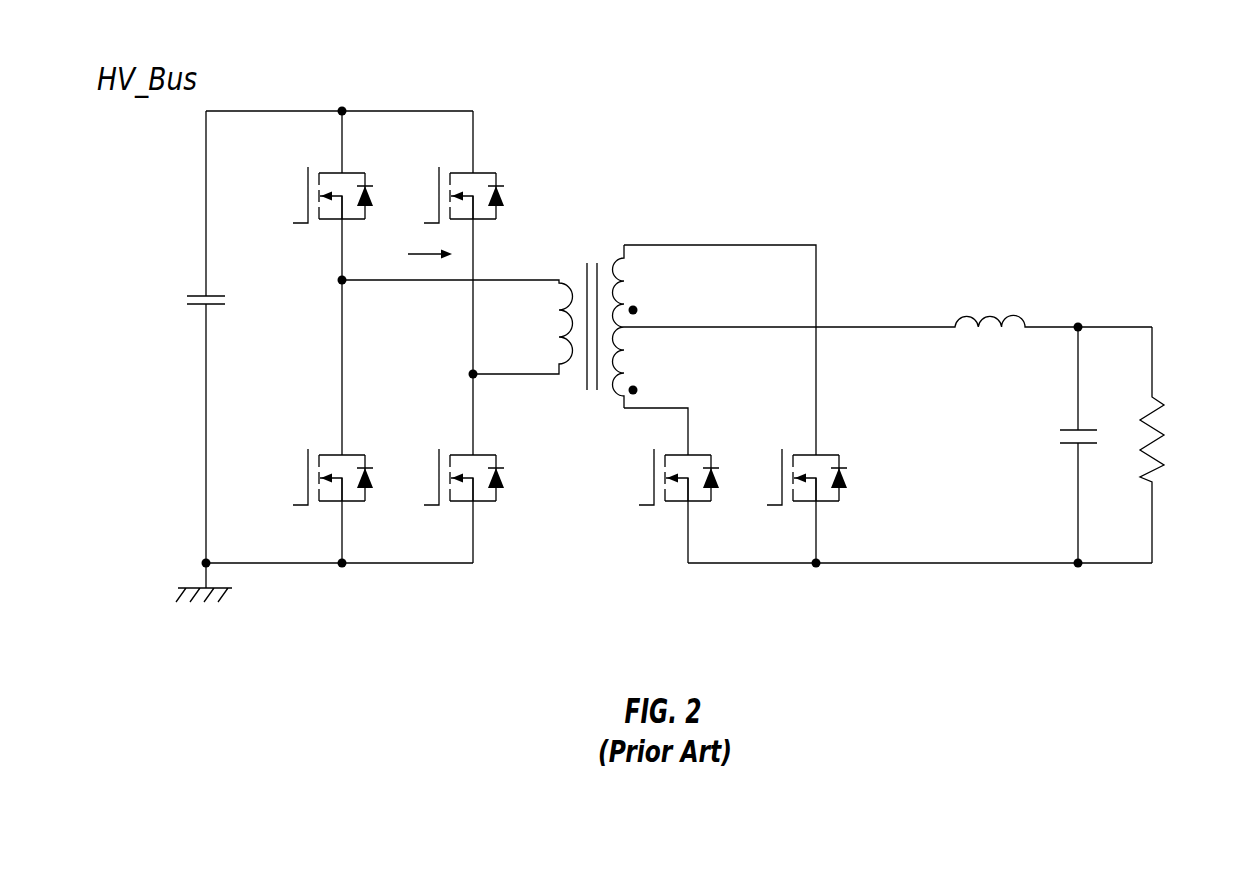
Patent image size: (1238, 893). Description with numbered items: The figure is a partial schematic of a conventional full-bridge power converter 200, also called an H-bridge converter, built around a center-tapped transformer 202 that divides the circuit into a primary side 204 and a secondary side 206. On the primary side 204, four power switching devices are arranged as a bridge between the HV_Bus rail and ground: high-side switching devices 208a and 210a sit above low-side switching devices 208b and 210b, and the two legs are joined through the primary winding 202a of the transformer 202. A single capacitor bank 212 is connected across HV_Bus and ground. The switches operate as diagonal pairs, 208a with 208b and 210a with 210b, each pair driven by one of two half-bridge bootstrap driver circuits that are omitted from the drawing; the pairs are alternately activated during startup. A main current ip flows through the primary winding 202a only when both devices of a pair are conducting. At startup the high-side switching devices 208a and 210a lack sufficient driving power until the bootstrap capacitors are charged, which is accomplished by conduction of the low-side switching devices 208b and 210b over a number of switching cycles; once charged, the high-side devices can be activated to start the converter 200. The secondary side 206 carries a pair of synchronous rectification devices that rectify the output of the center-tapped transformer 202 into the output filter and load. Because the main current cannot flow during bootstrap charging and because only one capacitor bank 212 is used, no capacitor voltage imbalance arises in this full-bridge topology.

The full-bridge power converter 200 is at (1007, 70).
The center-tapped transformer 202 is at (514, 296).
The primary winding 202a is at (558, 282).
The primary side 204 is at (388, 377).
The secondary side 206 is at (933, 595).
The high-side switching device 208a is at (352, 173).
The low-side switching device 208b is at (483, 502).
The high-side switching device 210a is at (483, 173).
The low-side switching device 210b is at (327, 454).
The capacitor bank 212 is at (198, 305).